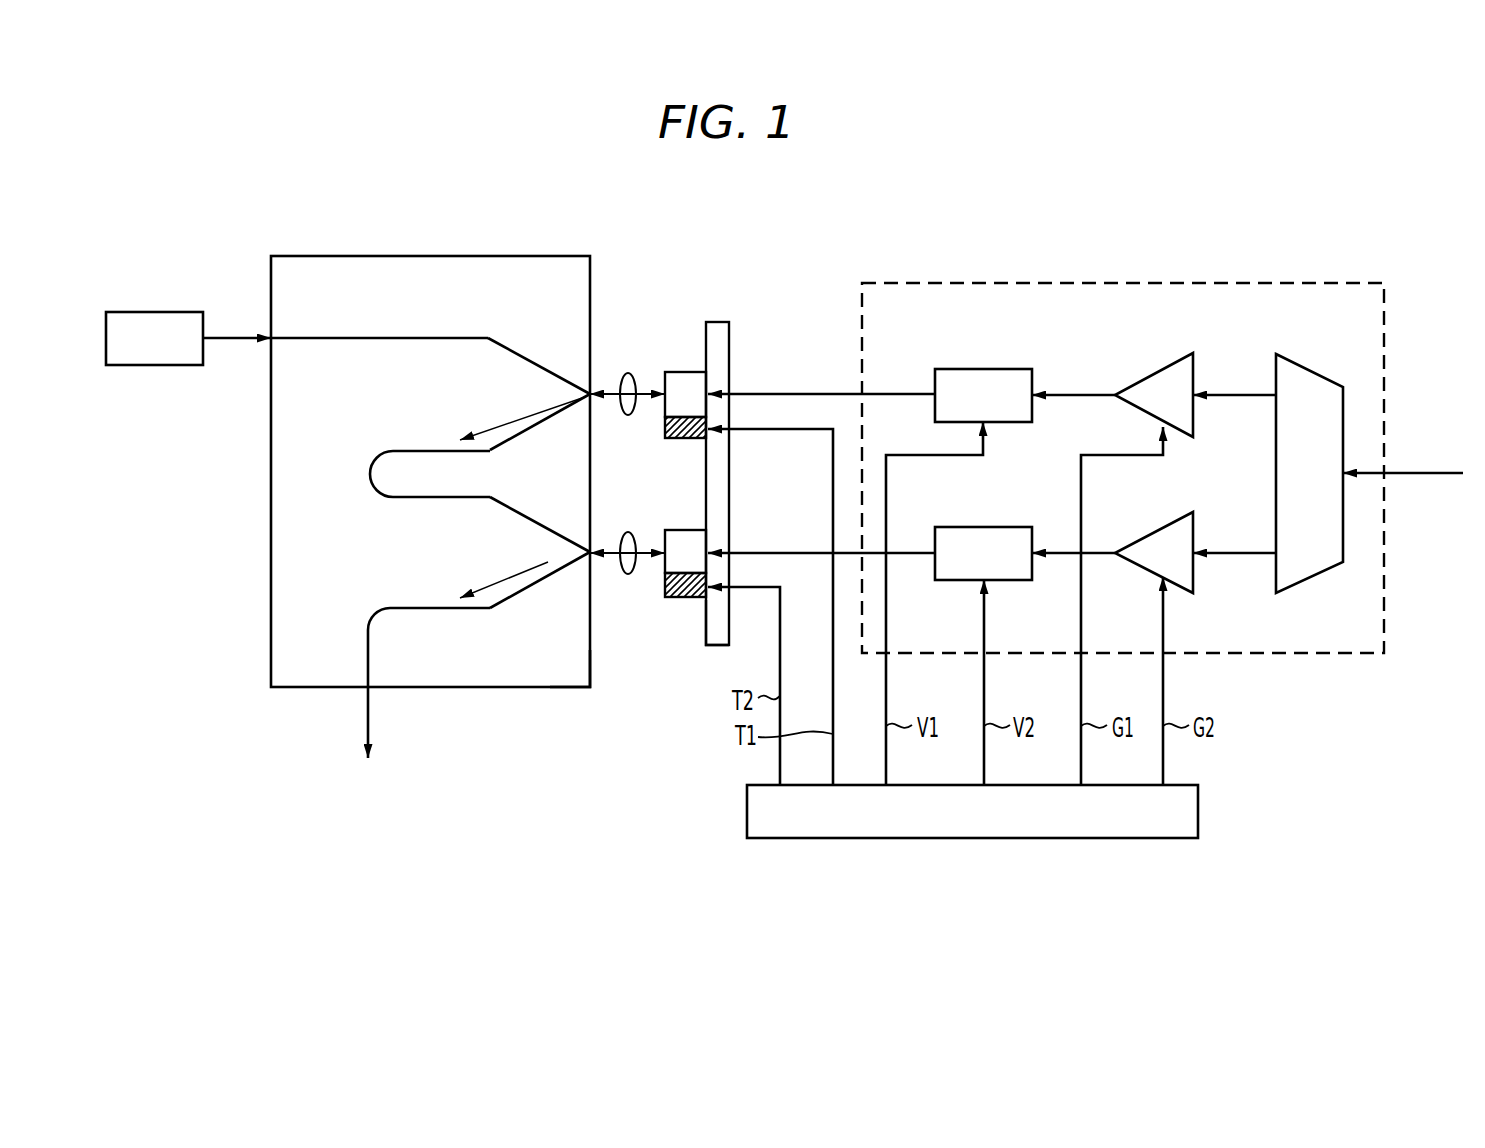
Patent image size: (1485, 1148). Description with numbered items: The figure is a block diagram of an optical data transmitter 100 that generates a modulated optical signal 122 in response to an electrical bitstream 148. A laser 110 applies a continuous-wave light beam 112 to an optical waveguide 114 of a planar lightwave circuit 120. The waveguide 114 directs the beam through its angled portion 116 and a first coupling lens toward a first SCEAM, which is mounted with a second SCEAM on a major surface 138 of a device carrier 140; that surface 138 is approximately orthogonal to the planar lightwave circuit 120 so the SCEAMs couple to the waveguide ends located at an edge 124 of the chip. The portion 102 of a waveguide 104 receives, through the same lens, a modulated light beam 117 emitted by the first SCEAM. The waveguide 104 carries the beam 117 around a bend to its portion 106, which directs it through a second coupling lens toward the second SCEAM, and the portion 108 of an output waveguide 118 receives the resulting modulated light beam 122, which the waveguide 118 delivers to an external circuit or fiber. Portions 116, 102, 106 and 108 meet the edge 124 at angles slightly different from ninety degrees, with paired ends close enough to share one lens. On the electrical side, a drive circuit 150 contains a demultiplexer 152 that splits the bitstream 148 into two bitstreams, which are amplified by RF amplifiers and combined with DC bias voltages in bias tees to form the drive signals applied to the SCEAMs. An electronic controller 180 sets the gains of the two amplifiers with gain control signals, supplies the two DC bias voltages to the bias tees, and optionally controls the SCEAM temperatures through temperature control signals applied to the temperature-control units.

The optical data transmitter 100 is at (742, 191).
The laser 110 is at (160, 310).
The continuous-wave light beam 112 is at (236, 345).
The planar lightwave circuit 120 is at (427, 256).
The optical waveguide 114 is at (322, 337).
The portion of waveguide 114 116 is at (548, 360).
The modulated light beam 117 is at (529, 421).
The portion of waveguide 104 102 is at (519, 450).
The optical waveguide 104 is at (369, 473).
The portion of waveguide 104 106 is at (567, 526).
The portion of waveguide 118 108 is at (545, 596).
The optical waveguide 118 is at (368, 656).
The modulated optical signal 122 is at (529, 578).
The edge of the PLC 124 is at (594, 679).
The device carrier 140 is at (718, 322).
The major surface of the device carrier 138 is at (703, 634).
The electrical drive circuit 150 is at (1120, 283).
The demultiplexer 152 is at (1315, 373).
The electrical bitstream 148 is at (1423, 473).
The electronic controller 180 is at (970, 838).